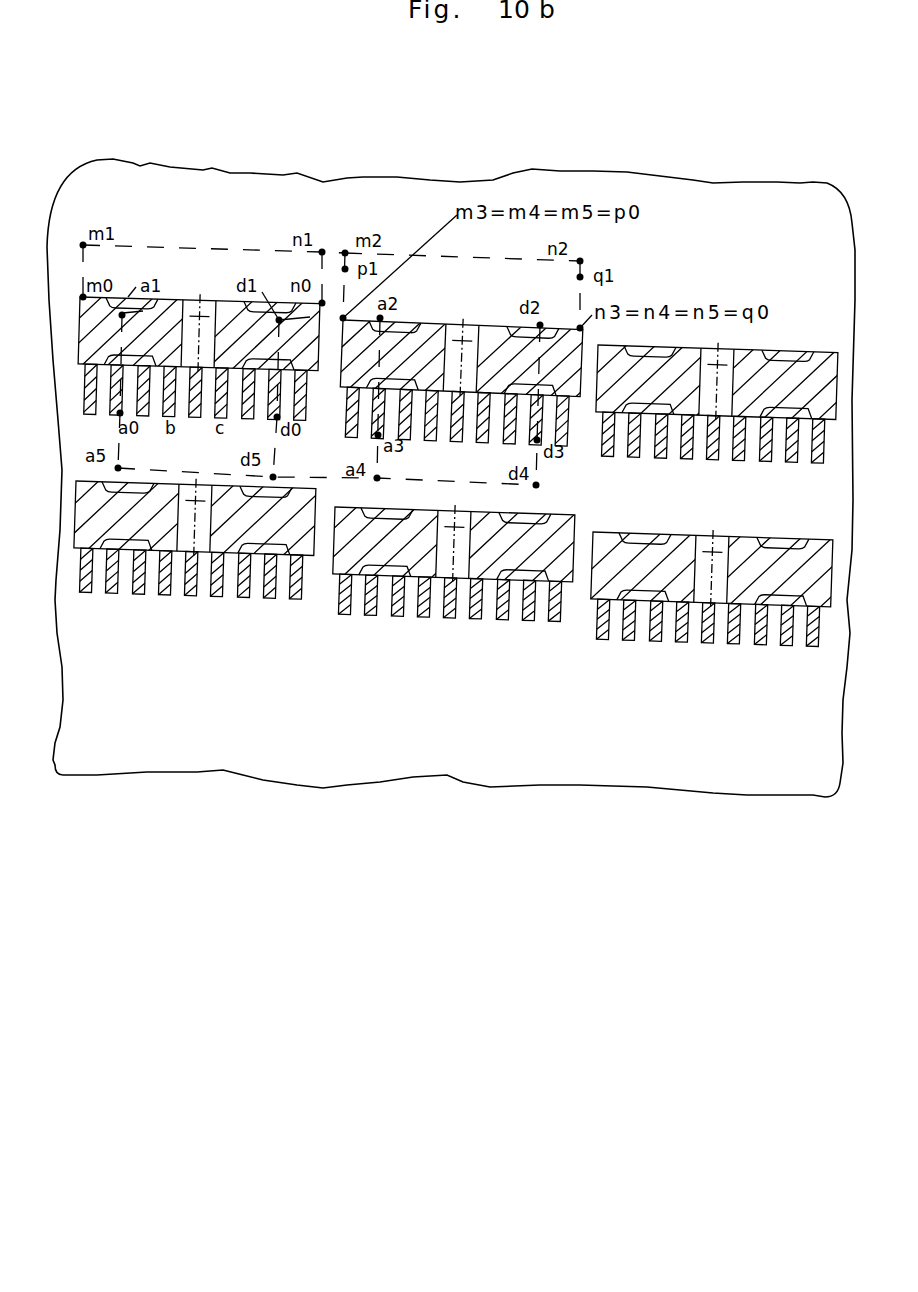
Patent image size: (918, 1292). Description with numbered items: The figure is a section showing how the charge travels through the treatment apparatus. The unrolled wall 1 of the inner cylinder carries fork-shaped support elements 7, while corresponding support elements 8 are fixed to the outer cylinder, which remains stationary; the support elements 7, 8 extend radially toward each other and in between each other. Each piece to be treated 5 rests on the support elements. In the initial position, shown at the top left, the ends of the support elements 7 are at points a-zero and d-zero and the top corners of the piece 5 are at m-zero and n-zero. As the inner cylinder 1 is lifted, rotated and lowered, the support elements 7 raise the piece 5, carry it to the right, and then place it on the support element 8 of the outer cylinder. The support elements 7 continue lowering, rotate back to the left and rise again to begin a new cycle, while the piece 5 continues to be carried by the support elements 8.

The inner cylinder wall 1 is at (448, 775).
The piece to be treated 5 is at (823, 363).
The fork-shaped support element 7 is at (214, 593).
The outer cylinder support element 8 is at (192, 588).